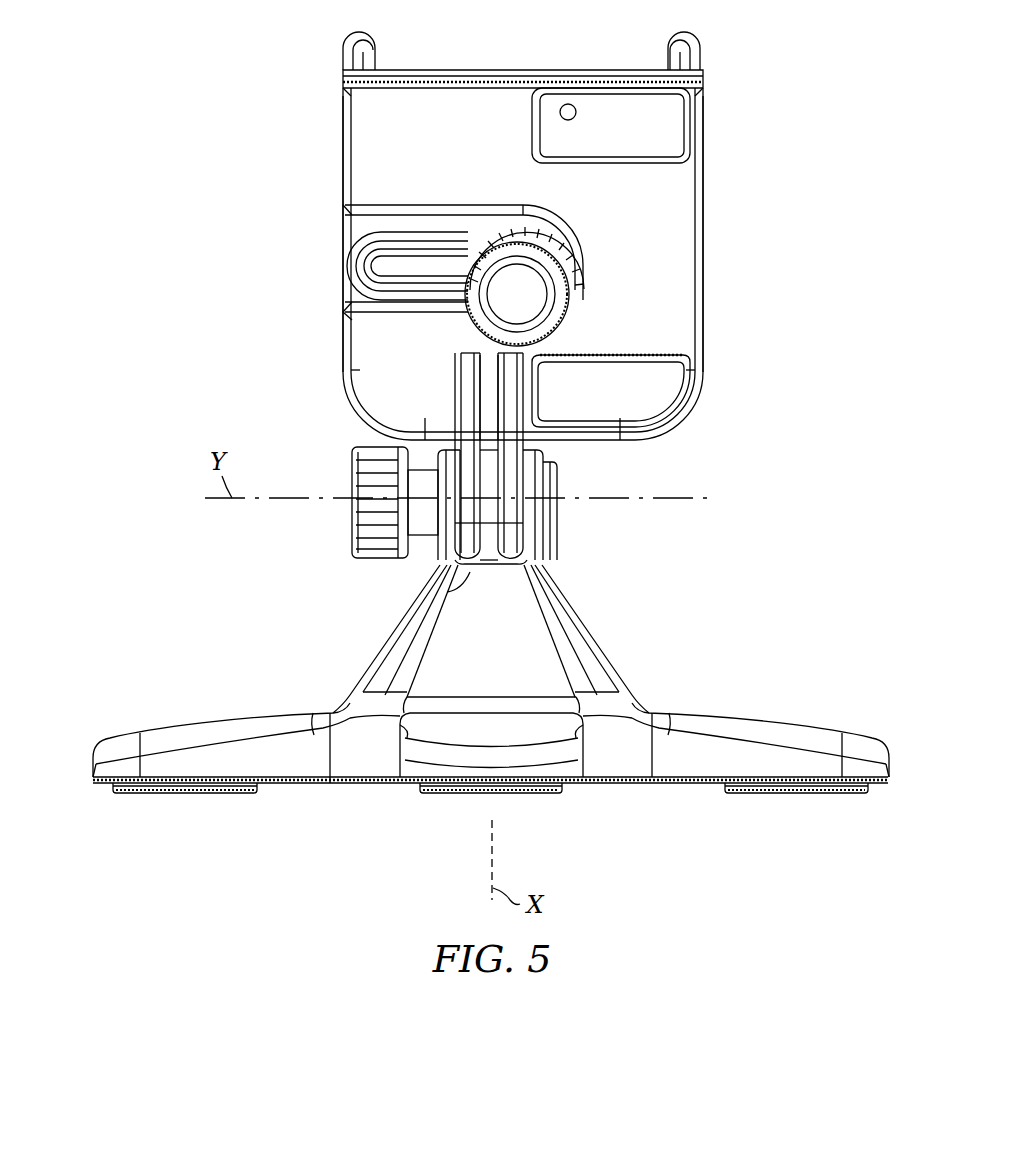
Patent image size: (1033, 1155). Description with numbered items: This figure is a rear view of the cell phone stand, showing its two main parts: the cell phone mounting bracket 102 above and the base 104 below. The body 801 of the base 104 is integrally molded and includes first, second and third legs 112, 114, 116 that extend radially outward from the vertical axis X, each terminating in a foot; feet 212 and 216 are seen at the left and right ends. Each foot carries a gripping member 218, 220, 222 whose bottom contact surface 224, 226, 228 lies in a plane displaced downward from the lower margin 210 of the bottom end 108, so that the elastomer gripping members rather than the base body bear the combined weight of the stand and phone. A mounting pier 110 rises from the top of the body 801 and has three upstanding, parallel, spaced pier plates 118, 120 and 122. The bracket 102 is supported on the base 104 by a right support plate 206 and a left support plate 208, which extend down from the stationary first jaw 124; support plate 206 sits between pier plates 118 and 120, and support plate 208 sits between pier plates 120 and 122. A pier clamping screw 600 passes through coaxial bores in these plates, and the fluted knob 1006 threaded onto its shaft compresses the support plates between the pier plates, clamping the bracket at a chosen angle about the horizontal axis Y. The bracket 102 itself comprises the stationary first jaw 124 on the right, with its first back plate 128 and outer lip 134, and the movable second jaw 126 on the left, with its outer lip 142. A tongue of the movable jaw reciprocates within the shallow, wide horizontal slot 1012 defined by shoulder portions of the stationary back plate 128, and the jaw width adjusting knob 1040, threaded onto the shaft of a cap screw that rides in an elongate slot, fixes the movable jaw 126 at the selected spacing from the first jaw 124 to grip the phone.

The cell phone mounting bracket 102 is at (298, 291).
The base 104 is at (244, 698).
The bottom end 108 is at (630, 768).
The mounting pier 110 is at (575, 484).
The first leg 112 is at (175, 733).
The second leg 114 is at (492, 735).
The third leg 116 is at (800, 733).
The right pier plate 118 is at (535, 523).
The pier plate 120 is at (490, 562).
The pier plate 122 is at (446, 547).
The first jaw 124 is at (703, 146).
The second jaw 126 is at (343, 146).
The first back plate 128 is at (655, 212).
The outer lip 134 is at (668, 60).
The outer lip 142 is at (376, 60).
The right support plate 206 is at (512, 540).
The left support plate 208 is at (470, 575).
The lower margin 210 is at (355, 785).
The foot 212 is at (110, 756).
The foot 216 is at (870, 757).
The gripping member 218 is at (160, 791).
The gripping member 220 is at (518, 791).
The gripping member 222 is at (835, 791).
The contact surface 224 is at (200, 792).
The contact surface 226 is at (458, 792).
The contact surface 228 is at (790, 792).
The pier clamping screw 600 is at (352, 528).
The body 801 is at (583, 662).
The fluted knob 1006 is at (352, 470).
The horizontal slot 1012 is at (424, 262).
The jaw width adjusting knob 1040 is at (557, 318).